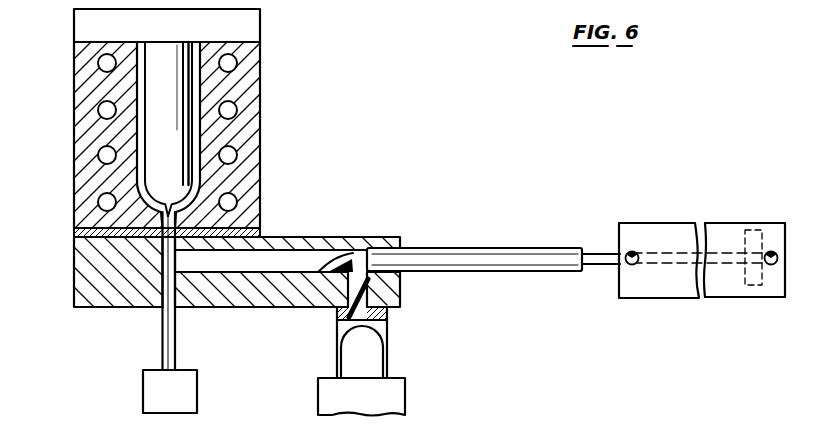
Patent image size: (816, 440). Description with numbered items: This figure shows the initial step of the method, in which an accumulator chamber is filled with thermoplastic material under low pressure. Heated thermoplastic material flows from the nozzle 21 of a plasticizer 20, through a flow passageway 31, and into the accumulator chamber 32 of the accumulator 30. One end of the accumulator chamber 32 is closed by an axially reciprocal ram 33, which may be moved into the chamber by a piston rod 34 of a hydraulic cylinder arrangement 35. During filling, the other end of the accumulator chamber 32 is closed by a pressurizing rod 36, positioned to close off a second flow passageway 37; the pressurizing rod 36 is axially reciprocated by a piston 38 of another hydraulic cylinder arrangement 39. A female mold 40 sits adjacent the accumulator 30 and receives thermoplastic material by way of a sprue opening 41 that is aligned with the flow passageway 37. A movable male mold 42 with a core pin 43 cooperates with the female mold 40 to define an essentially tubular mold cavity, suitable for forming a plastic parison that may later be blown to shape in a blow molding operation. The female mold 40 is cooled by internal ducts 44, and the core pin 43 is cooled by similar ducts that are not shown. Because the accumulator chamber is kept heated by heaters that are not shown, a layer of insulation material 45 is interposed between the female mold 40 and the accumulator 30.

The plasticizer 20 is at (395, 397).
The nozzle 21 is at (375, 352).
The accumulator 30 is at (358, 238).
The flow passageway 31 is at (368, 280).
The accumulator chamber 32 is at (305, 252).
The ram 33 is at (500, 262).
The piston rod 34 is at (600, 258).
The hydraulic cylinder arrangement 35 is at (683, 288).
The pressurizing rod 36 is at (166, 296).
The flow passageway 37 is at (165, 277).
The piston 38 is at (170, 357).
The hydraulic cylinder arrangement 39 is at (185, 391).
The female mold 40 is at (78, 135).
The sprue opening 41 is at (170, 214).
The male mold 42 is at (75, 20).
The core pin 43 is at (152, 97).
The internal ducts 44 is at (105, 200).
The insulation material 45 is at (78, 237).